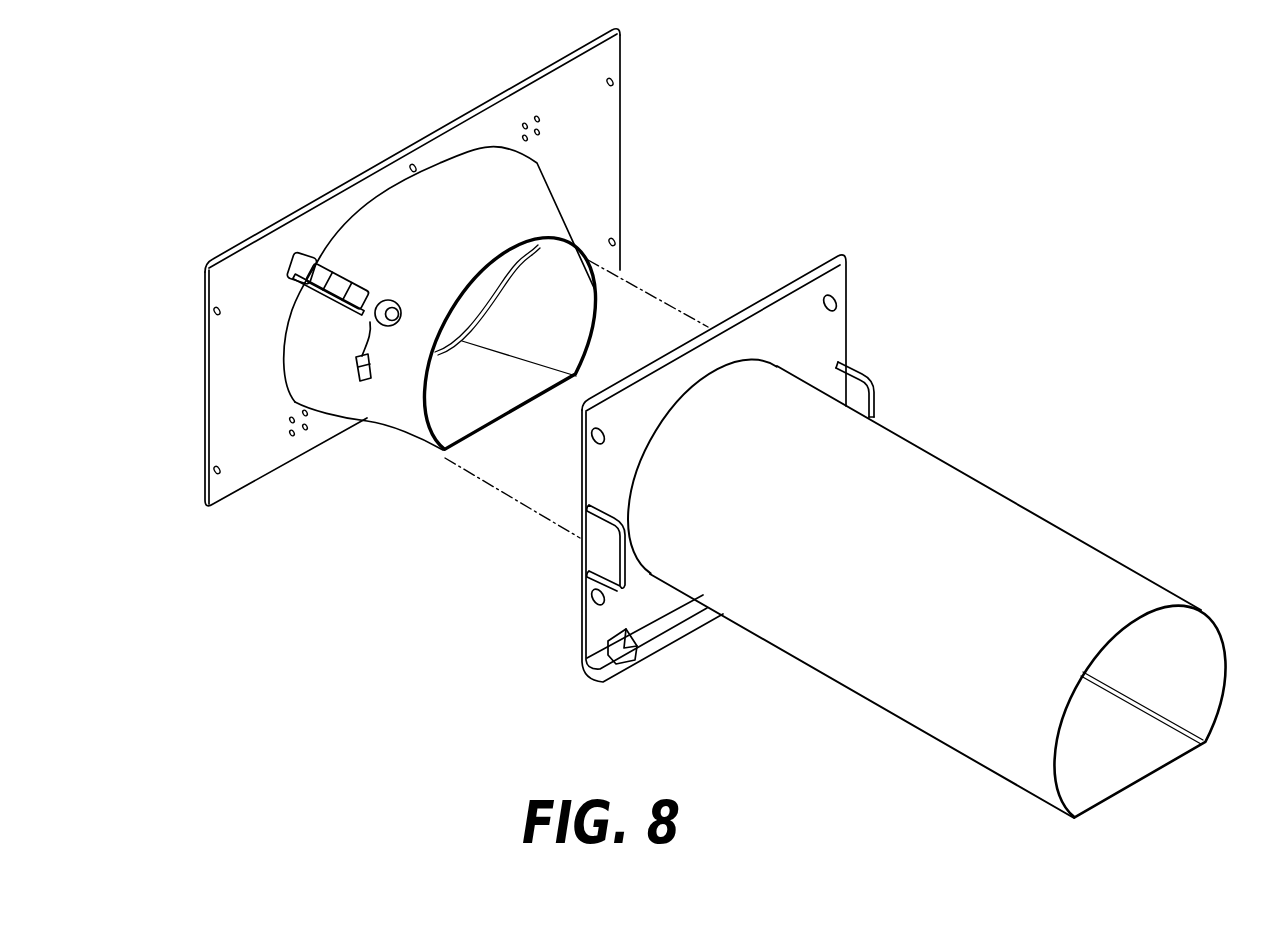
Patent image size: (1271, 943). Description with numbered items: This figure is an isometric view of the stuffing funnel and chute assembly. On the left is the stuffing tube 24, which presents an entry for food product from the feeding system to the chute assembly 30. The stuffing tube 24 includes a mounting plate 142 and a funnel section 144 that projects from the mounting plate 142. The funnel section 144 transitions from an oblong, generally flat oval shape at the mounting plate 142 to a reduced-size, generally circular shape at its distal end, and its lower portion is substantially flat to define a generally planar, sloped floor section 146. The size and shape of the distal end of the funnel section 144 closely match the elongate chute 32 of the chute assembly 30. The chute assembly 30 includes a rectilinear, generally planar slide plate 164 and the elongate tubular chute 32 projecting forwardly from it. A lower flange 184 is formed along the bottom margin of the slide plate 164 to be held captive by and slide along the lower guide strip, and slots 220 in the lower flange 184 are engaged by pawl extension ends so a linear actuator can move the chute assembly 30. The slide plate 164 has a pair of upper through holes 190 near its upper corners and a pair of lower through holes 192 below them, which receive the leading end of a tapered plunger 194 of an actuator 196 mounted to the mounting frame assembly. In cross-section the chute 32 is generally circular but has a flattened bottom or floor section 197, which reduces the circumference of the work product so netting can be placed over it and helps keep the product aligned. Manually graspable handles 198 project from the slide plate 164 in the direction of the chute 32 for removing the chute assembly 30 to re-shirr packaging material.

The stuffing tube 24 is at (291, 210).
The mounting plate 142 is at (608, 141).
The slide plate 164 is at (761, 304).
The upper through holes 190 is at (840, 305).
The handles 198 is at (874, 382).
The chute 32 is at (1025, 521).
The floor section 146 is at (473, 406).
The tapered plunger 194 is at (395, 328).
The actuator 196 is at (307, 288).
The funnel section 144 is at (406, 405).
The lower through holes 192 is at (600, 606).
The lower flange 184 is at (690, 624).
The slots 220 is at (630, 648).
The chute assembly 30 is at (883, 719).
The floor section 197 is at (1128, 770).